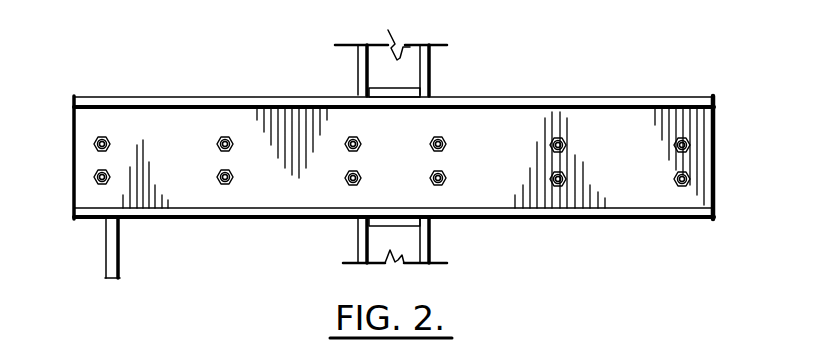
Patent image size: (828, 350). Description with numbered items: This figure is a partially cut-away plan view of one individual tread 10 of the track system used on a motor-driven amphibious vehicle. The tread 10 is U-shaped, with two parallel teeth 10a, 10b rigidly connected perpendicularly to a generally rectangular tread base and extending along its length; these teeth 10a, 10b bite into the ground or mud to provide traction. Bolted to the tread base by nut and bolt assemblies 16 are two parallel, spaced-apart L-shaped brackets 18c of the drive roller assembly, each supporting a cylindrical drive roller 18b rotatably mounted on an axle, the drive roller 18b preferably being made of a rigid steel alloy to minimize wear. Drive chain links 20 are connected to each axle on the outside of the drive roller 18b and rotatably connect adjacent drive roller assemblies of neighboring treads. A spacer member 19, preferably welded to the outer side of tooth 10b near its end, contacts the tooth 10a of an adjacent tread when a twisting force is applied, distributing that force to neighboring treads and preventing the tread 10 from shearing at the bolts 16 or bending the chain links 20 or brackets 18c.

The tread 10 is at (554, 94).
The tooth 10a is at (652, 102).
The tooth 10b is at (616, 210).
The nut and bolt assemblies 16 is at (112, 144).
The drive roller 18b is at (393, 94).
The L-shaped brackets 18c is at (357, 95).
The spacer member 19 is at (107, 250).
The drive chain links 20 is at (357, 66).